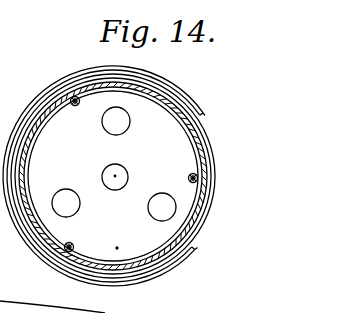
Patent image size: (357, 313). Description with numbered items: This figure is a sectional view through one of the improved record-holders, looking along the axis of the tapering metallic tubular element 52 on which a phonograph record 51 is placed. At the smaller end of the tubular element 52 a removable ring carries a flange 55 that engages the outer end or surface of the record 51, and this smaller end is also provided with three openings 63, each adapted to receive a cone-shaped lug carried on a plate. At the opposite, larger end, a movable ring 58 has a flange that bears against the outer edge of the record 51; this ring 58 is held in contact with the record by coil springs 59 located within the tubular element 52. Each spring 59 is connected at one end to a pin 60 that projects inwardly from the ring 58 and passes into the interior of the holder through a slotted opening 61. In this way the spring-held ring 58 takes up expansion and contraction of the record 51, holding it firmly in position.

The record 51 is at (190, 101).
The metallic tubular element 52 is at (212, 205).
The flange 55 is at (115, 180).
The movable ring 58 is at (208, 153).
The coil springs 59 is at (74, 106).
The pins 60 is at (72, 97).
The slotted openings 61 is at (76, 96).
The openings 63 is at (156, 205).